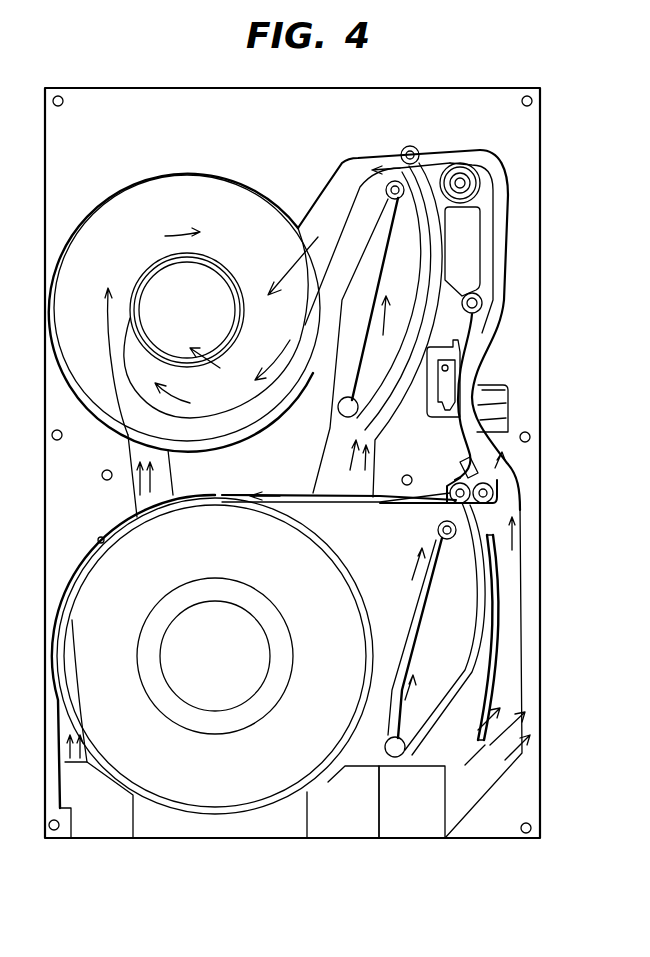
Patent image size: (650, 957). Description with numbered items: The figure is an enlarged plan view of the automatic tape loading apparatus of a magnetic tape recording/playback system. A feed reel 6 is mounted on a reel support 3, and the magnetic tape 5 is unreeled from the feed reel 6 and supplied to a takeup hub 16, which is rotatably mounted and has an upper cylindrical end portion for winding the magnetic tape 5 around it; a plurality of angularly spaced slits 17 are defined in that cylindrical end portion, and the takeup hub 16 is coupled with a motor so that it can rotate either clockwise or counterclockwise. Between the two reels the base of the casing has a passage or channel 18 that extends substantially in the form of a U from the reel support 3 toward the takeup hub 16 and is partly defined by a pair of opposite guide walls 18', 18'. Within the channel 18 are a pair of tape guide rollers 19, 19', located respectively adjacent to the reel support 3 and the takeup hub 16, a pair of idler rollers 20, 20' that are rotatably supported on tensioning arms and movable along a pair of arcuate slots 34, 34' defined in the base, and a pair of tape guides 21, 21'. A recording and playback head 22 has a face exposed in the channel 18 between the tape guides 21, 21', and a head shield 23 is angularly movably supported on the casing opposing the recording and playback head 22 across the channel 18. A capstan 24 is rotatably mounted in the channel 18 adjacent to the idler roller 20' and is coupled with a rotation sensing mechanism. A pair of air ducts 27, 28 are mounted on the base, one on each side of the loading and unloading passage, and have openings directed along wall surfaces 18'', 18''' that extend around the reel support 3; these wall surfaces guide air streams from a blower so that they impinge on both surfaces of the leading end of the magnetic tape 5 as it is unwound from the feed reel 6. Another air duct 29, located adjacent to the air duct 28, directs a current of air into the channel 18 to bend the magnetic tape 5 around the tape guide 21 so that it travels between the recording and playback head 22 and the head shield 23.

The reel support 3 is at (262, 632).
The magnetic tape 5 is at (374, 518).
The feed reel 6 is at (240, 800).
The takeup hub 16 is at (180, 360).
The slits 17 is at (135, 314).
The channel 18 is at (490, 562).
The guide walls 18' is at (495, 241).
The wall surface 18'' is at (212, 654).
The wall surface 18''' is at (408, 638).
The tape guide roller 19 is at (428, 528).
The tape guide roller 19' is at (370, 337).
The idler roller 20 is at (428, 649).
The idler roller 20' is at (427, 140).
The tape guide 21 is at (481, 480).
The tape guide 21' is at (501, 272).
The recording and playback head 22 is at (490, 393).
The head shield 23 is at (443, 393).
The capstan 24 is at (463, 210).
The air duct 27 is at (108, 826).
The air duct 28 is at (348, 830).
The air duct 29 is at (421, 830).
The arcuate slot 34 is at (451, 629).
The arcuate slot 34' is at (396, 330).